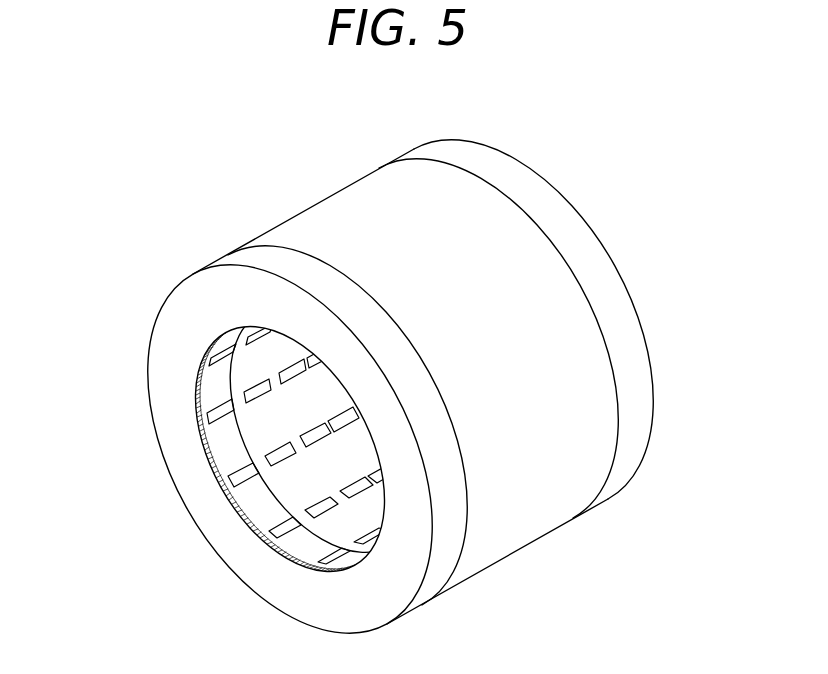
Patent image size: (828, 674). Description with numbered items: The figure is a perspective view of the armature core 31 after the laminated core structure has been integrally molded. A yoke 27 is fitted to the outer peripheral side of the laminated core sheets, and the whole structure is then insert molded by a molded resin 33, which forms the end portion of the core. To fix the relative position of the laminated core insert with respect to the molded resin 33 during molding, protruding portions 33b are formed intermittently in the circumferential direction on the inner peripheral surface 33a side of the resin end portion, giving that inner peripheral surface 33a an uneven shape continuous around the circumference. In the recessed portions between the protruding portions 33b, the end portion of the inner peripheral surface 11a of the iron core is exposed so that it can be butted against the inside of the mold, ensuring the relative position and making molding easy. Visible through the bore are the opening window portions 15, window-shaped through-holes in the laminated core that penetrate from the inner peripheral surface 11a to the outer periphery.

The armature core 31 is at (364, 371).
The yoke 27 is at (381, 220).
The molded resin 33 is at (493, 176).
The inner peripheral surface 11a is at (270, 356).
The inner peripheral surface 33a is at (254, 503).
The protruding portion 33b is at (232, 440).
The opening window portion 15 is at (288, 458).